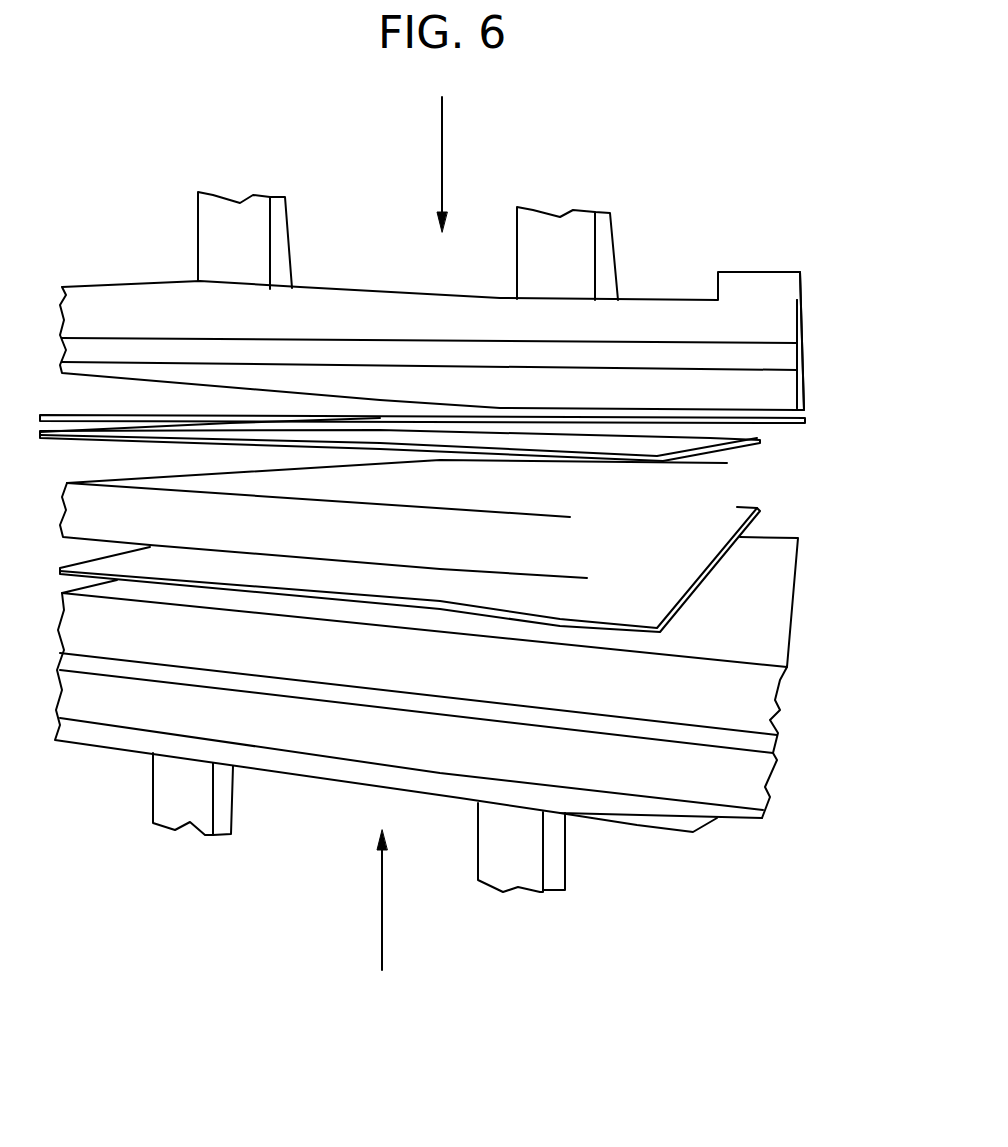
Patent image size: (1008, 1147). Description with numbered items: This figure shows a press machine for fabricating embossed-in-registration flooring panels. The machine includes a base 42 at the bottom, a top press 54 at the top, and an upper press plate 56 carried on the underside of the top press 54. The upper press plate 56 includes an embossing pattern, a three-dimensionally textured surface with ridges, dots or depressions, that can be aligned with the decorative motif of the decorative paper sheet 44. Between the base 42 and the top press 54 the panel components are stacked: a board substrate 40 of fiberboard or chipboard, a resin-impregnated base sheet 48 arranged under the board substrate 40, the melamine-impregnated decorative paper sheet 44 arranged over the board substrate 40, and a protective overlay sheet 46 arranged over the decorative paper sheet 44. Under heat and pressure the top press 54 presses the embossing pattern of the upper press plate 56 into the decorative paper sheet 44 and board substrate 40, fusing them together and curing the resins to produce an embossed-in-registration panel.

The top press 54 is at (327, 290).
The upper press plate 56 is at (803, 375).
The protective overlay sheet 46 is at (803, 418).
The decorative paper sheet 44 is at (758, 442).
The board substrate 40 is at (683, 499).
The base sheet 48 is at (717, 528).
The base 42 is at (122, 750).